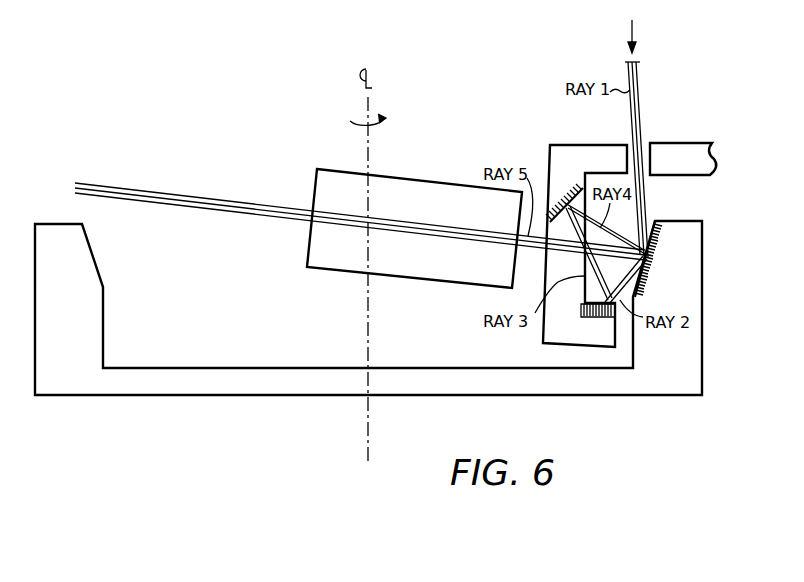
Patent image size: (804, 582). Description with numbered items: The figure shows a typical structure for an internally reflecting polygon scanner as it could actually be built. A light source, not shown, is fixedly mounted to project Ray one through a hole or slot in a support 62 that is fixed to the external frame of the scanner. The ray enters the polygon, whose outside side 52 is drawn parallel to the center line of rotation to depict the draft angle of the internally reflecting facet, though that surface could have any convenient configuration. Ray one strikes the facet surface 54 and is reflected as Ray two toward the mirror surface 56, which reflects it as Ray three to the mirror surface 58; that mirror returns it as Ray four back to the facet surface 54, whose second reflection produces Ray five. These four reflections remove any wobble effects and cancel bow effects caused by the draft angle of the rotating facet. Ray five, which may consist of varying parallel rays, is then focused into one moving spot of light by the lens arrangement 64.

The side of the polygon 52 is at (704, 329).
The facet surface 54 is at (650, 221).
The mirror surface 56 is at (582, 303).
The mirror surface 58 is at (562, 198).
The support 62 is at (691, 152).
The lens arrangement 64 is at (430, 282).